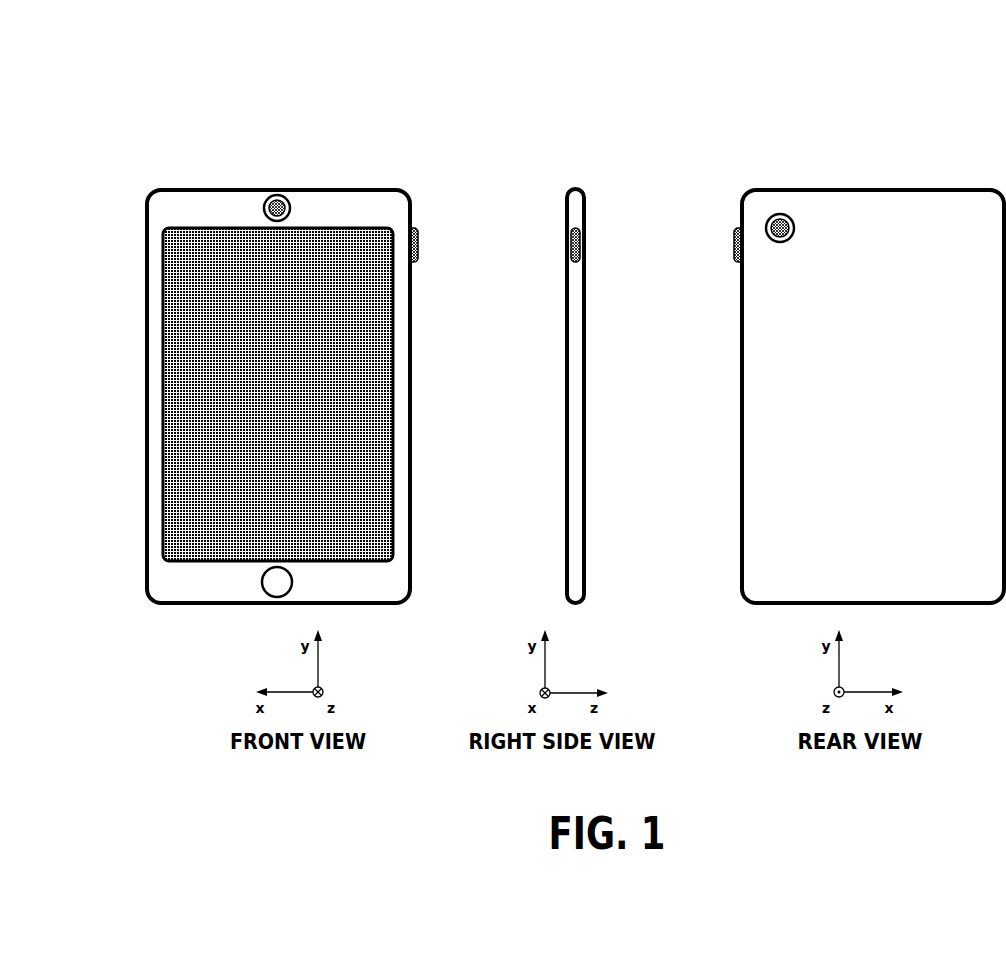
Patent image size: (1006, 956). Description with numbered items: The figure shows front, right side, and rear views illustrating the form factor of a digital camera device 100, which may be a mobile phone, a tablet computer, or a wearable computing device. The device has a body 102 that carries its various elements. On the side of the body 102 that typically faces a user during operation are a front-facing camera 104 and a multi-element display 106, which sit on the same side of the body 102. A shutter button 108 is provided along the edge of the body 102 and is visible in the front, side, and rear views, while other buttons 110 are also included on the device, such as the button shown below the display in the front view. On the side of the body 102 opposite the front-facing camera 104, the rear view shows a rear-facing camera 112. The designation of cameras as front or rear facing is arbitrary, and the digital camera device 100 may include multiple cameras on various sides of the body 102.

The digital camera device 100 is at (320, 80).
The body 102 is at (250, 187).
The front-facing camera 104 is at (291, 200).
The multi-element display 106 is at (369, 227).
The shutter button 108 is at (420, 240).
The other buttons 110 is at (277, 598).
The rear-facing camera 112 is at (774, 214).